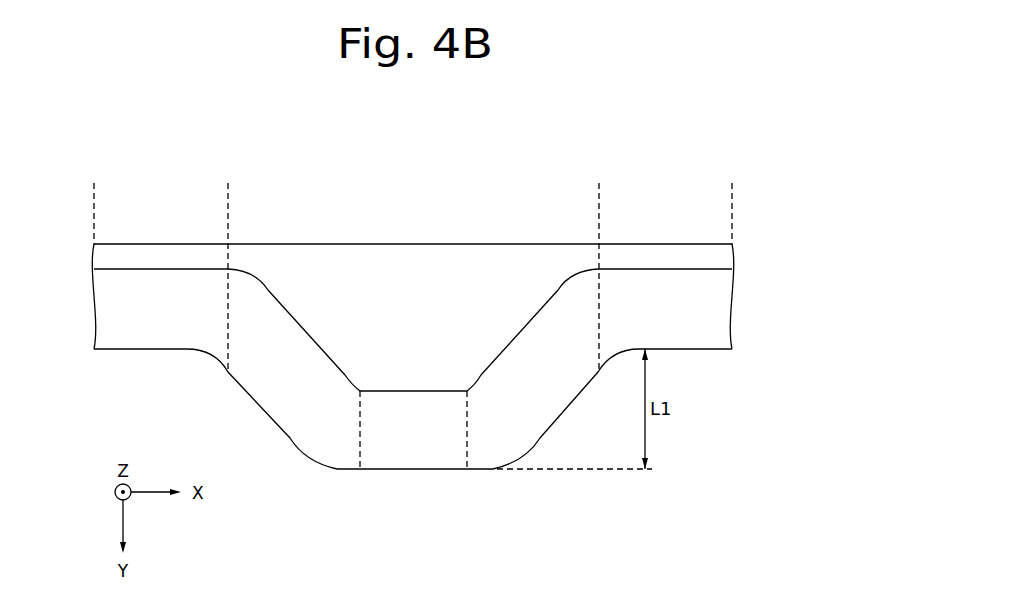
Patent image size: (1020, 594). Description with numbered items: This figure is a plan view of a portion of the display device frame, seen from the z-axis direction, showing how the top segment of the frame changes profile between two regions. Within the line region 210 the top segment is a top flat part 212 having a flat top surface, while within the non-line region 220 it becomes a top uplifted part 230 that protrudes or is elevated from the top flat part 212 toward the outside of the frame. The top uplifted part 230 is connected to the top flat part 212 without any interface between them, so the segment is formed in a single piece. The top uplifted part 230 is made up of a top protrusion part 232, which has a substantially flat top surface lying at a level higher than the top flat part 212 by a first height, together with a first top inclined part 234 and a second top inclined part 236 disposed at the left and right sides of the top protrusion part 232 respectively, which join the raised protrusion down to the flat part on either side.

The line region 210 is at (732, 195).
The non-line region 220 is at (413, 282).
The top flat part 212 is at (707, 377).
The top uplifted part 230 is at (413, 450).
The top protrusion part 232 is at (410, 458).
The first top inclined part 234 is at (295, 430).
The second top inclined part 236 is at (566, 435).